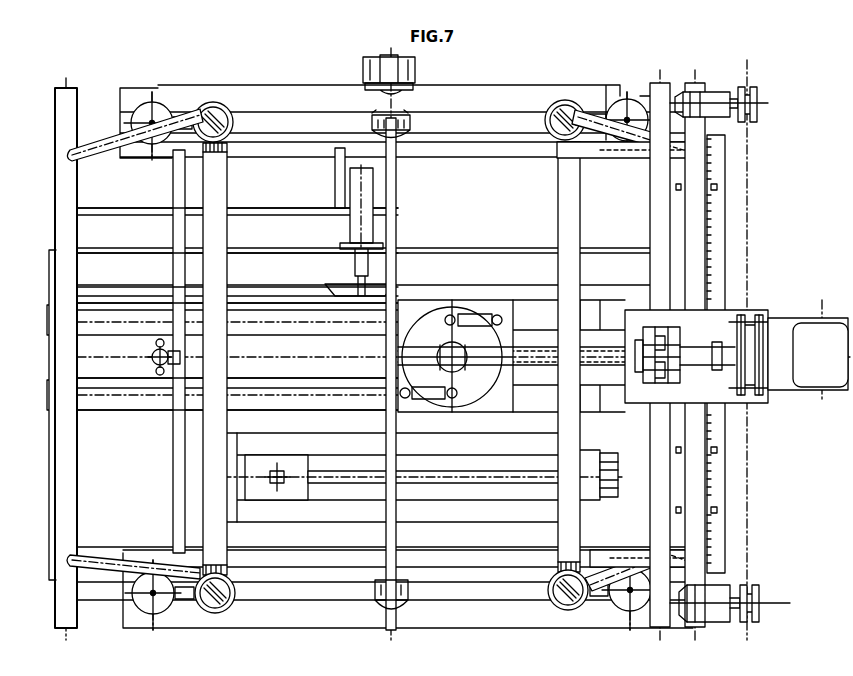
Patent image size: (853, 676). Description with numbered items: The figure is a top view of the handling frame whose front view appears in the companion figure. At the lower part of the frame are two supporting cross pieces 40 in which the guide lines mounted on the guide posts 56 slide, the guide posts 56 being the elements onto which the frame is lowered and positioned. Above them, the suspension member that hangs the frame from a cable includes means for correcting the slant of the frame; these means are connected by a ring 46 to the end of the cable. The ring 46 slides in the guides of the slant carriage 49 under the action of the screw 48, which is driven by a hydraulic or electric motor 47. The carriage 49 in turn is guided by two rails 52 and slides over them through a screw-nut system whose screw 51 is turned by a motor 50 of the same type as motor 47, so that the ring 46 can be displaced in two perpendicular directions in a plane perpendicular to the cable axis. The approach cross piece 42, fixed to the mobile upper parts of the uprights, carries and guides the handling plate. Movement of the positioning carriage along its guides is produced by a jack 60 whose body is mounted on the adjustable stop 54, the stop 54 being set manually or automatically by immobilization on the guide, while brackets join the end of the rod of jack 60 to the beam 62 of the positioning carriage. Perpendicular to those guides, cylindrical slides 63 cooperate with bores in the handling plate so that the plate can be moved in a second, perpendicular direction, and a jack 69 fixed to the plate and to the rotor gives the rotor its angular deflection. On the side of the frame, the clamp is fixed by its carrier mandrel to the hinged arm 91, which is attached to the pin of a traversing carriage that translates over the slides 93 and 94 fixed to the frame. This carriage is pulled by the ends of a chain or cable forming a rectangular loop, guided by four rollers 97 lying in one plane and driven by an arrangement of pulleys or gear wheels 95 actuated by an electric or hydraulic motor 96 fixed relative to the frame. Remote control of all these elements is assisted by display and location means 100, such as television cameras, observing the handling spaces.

The supporting cross piece 40 is at (232, 90).
The approach cross piece 42 is at (62, 135).
The ring 46 is at (297, 462).
The motor 47 is at (625, 470).
The screw 48 is at (357, 470).
The slant carriage 49 is at (233, 445).
The motor 50 is at (418, 65).
The screw 51 is at (398, 180).
The rail 52 is at (226, 172).
The adjustable stop 54 is at (278, 218).
The guide post 56 is at (150, 121).
The jack 60 is at (350, 190).
The beam 62 is at (95, 287).
The cylindrical slide 63 is at (130, 403).
The jack 69 is at (480, 315).
The arm 91 is at (822, 320).
The slide 93 is at (715, 190).
The slide 94 is at (725, 182).
The pulleys or gear wheels 95 is at (766, 297).
The motor 96 is at (670, 340).
The roller 97 is at (757, 105).
The display and location means 100 is at (160, 370).